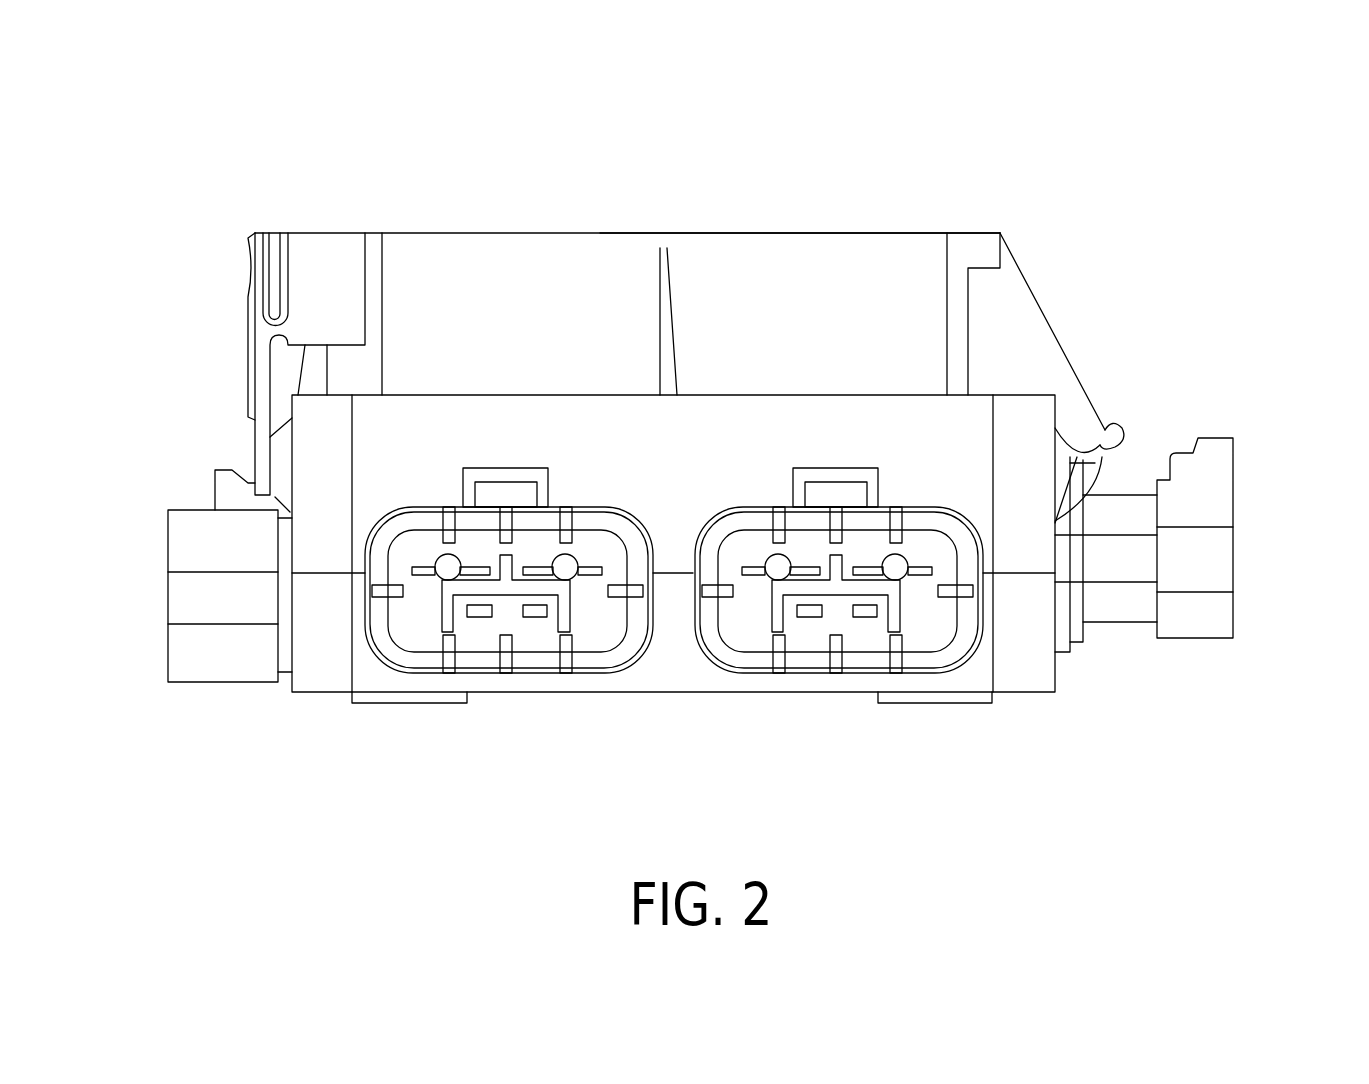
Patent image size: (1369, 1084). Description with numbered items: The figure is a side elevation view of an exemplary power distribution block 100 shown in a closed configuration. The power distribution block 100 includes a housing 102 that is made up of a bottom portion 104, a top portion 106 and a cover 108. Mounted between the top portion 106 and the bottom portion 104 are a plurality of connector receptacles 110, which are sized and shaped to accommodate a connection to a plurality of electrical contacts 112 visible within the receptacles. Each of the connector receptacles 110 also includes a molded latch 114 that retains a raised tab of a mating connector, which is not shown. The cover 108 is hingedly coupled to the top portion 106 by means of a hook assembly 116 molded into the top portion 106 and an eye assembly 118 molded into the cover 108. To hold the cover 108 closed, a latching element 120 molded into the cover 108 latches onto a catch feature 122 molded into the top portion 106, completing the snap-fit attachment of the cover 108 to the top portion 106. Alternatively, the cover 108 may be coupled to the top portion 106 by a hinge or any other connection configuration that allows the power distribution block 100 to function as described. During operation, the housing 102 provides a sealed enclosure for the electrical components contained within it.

The power distribution block 100 is at (432, 102).
The housing 102 is at (248, 245).
The bottom portion 104 is at (695, 692).
The top portion 106 is at (292, 467).
The cover 108 is at (790, 232).
The connector receptacles 110 is at (168, 655).
The electrical contacts 112 is at (478, 617).
The molded latch 114 is at (550, 487).
The hook assembly 116 is at (1105, 418).
The eye assembly 118 is at (1038, 310).
The latching element 120 is at (255, 427).
The catch feature 122 is at (283, 488).